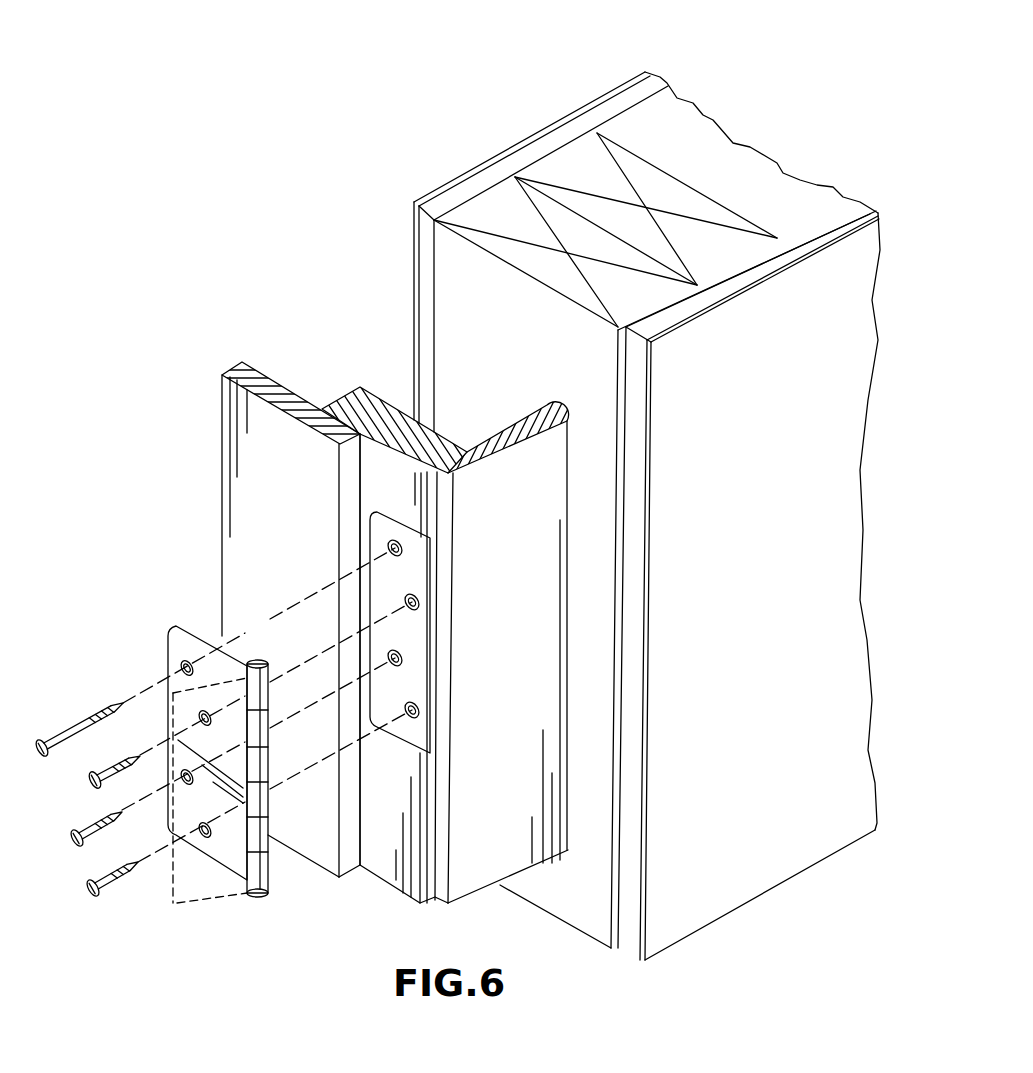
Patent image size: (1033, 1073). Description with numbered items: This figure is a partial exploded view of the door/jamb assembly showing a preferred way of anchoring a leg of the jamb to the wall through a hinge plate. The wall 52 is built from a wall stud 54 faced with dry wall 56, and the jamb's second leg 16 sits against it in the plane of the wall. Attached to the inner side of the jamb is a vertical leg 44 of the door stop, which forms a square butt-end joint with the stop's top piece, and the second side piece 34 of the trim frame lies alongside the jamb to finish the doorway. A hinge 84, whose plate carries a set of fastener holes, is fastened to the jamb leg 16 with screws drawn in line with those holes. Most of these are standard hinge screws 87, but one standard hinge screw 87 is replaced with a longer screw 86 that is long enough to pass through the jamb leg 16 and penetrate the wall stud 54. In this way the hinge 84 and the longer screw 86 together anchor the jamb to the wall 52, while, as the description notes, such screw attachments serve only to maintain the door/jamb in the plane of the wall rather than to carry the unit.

The second leg 16 is at (402, 478).
The second side piece 34 is at (547, 475).
The vertical leg 44 is at (238, 440).
The wall 52 is at (647, 493).
The wall stud 54 is at (488, 213).
The dry wall 56 is at (630, 95).
The hinge 84 is at (167, 645).
The longer screw 86 is at (78, 722).
The standard hinge screw 87 is at (132, 877).